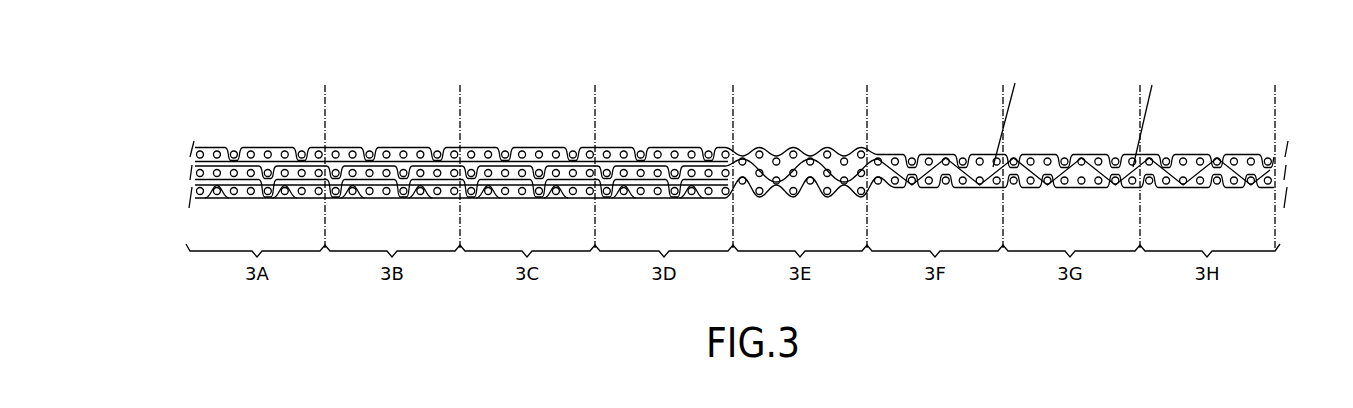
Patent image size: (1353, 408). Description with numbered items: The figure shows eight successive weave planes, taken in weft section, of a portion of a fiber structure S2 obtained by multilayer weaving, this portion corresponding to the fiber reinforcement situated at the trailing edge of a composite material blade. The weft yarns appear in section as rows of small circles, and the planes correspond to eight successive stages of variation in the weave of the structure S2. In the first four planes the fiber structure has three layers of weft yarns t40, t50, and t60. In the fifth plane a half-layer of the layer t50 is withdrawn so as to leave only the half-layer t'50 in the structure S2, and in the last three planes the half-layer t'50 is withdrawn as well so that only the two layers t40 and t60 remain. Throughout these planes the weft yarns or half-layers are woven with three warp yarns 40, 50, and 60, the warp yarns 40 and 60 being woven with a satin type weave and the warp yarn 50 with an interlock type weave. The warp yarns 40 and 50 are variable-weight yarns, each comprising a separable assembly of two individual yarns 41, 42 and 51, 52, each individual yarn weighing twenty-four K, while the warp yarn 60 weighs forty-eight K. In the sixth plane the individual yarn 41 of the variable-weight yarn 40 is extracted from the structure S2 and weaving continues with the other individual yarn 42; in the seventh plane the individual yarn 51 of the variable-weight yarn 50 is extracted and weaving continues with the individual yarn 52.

The warp yarn 40 is at (213, 131).
The individual yarn 41 is at (1015, 83).
The individual yarn 42 is at (1012, 160).
The warp yarn 50 is at (232, 157).
The individual yarn 51 is at (1152, 85).
The individual yarn 52 is at (1177, 157).
The warp yarn 60 is at (240, 199).
The fiber structure S2 is at (794, 94).
The layer of weft yarns t40 is at (1322, 160).
The layer of weft yarns t50 is at (1322, 180).
The layer of weft yarns t60 is at (183, 193).
The half-layer of weft yarns t'50 is at (754, 146).